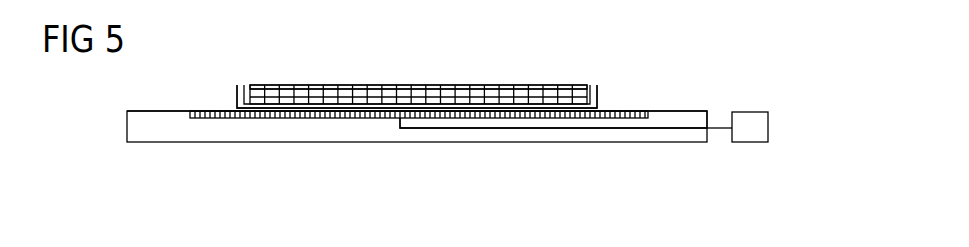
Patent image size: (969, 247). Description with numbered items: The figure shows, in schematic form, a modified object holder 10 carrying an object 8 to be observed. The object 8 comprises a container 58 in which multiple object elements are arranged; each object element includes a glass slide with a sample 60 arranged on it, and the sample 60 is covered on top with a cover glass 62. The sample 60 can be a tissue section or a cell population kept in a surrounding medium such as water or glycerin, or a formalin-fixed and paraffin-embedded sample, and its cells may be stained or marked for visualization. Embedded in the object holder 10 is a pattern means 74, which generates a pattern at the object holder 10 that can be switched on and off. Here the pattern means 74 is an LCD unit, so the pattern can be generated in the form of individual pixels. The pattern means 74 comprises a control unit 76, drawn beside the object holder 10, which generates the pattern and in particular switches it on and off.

The object 8 is at (598, 68).
The object holder 10 is at (665, 117).
The container 58 is at (237, 100).
The sample 60 is at (364, 95).
The cover glass 62 is at (496, 87).
The pattern means 74 is at (277, 126).
The control unit 76 is at (753, 135).